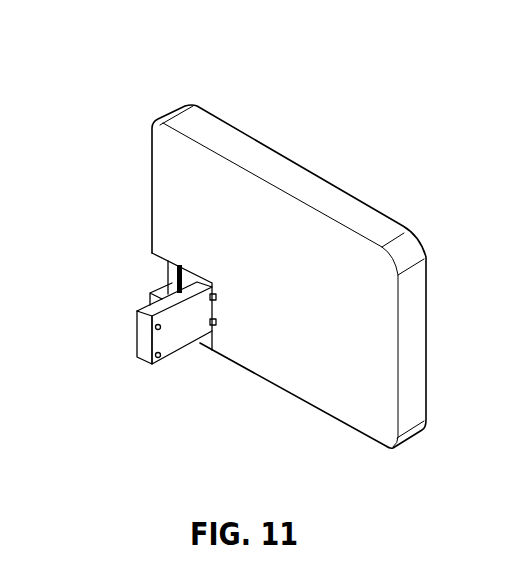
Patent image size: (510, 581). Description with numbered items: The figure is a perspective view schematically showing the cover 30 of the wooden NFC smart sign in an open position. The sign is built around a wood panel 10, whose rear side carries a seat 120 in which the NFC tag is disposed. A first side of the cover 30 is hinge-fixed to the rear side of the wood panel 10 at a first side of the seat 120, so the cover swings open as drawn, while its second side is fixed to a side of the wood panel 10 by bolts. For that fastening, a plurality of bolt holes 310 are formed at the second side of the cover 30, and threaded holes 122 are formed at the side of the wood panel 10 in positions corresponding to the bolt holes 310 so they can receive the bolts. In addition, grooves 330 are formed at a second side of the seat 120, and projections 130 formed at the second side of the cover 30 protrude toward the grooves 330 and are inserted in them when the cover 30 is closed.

The wood panel 10 is at (220, 135).
The seat 120 is at (190, 268).
The grooves 330 is at (175, 270).
The threaded holes 122 is at (172, 282).
The projections 130 is at (139, 307).
The cover 30 is at (180, 344).
The bolt holes 310 is at (153, 364).